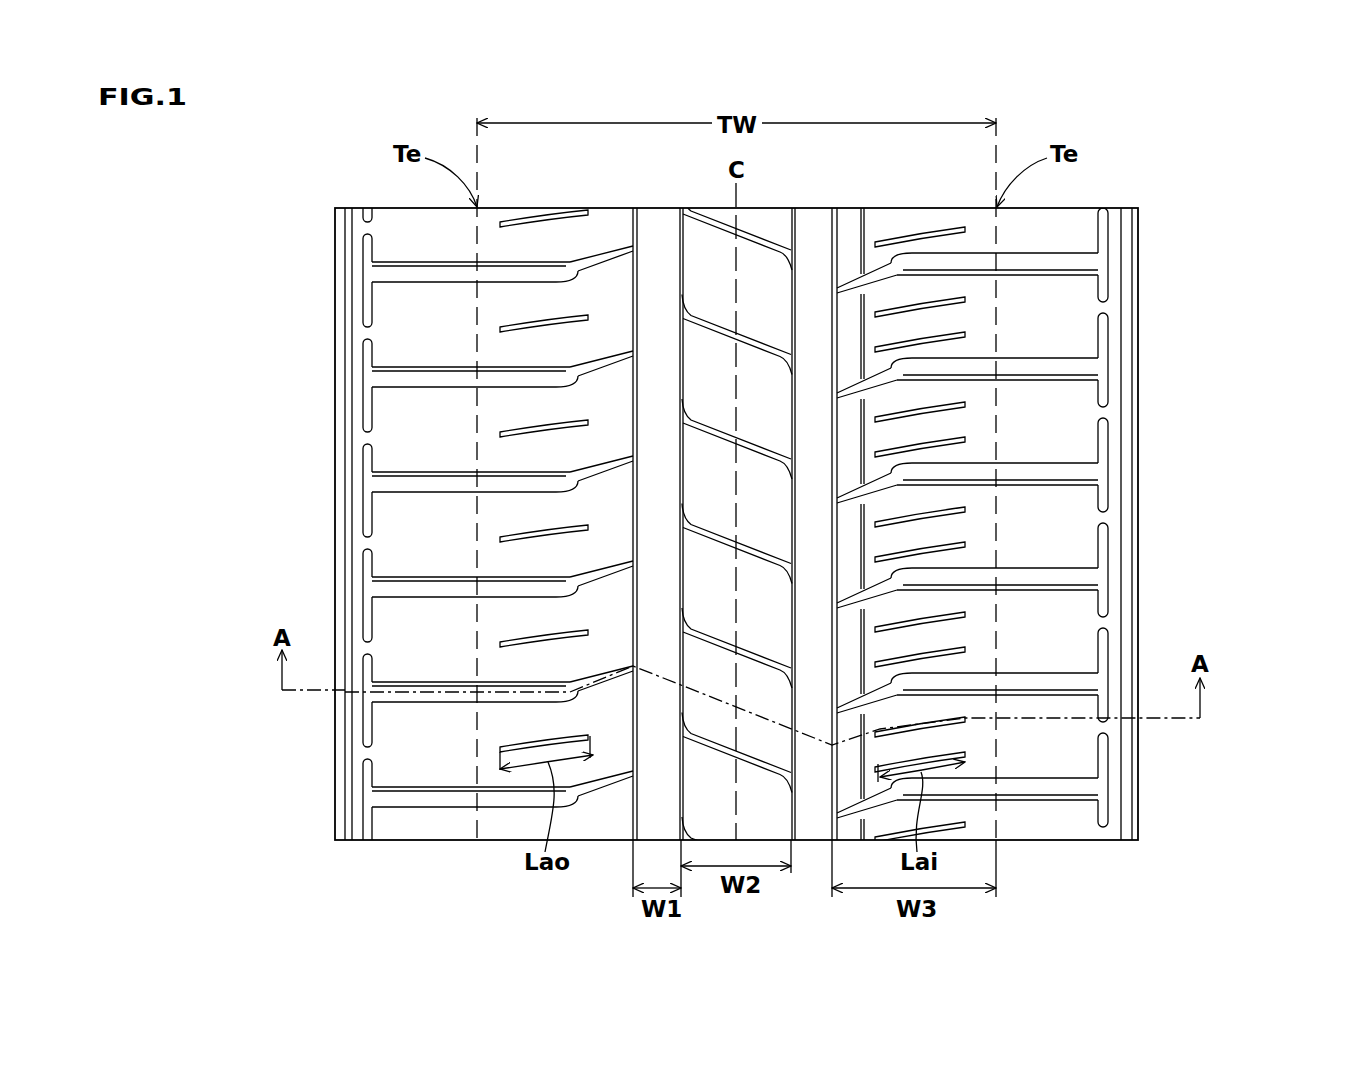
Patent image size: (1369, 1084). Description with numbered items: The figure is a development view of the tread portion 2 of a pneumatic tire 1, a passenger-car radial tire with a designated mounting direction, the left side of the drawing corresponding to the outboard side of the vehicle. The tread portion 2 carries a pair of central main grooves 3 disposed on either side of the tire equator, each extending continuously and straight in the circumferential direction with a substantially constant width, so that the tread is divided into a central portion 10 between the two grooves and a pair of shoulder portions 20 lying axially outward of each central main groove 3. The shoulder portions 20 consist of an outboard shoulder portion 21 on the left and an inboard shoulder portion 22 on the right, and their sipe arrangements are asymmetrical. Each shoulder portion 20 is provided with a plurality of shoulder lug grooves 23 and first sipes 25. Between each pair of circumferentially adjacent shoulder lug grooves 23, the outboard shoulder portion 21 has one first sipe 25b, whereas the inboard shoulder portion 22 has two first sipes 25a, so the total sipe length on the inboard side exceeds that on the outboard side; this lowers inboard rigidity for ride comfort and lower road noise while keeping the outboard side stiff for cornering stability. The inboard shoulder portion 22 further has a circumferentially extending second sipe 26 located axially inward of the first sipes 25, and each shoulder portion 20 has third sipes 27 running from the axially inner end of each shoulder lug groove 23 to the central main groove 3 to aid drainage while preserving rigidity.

The pneumatic tire 1 is at (730, 511).
The tread portion 2 is at (730, 511).
The central main groove 3 is at (660, 250).
The central portion 10 is at (712, 275).
The shoulder portion 20 is at (735, 490).
The outboard shoulder portion 21 is at (565, 300).
The inboard shoulder portion 22 is at (880, 262).
The shoulder lug groove 23 is at (500, 381).
The first sipe 25 is at (520, 433).
The first sipe 25a is at (923, 750).
The first sipe 25b is at (550, 755).
The second sipe 26 is at (865, 652).
The third sipe 27 is at (600, 566).